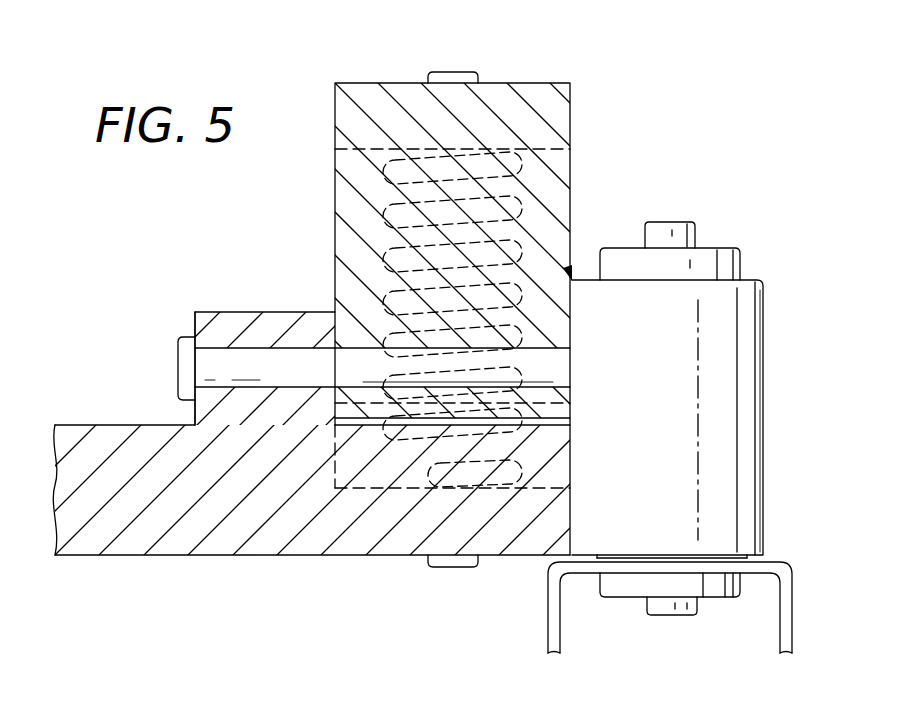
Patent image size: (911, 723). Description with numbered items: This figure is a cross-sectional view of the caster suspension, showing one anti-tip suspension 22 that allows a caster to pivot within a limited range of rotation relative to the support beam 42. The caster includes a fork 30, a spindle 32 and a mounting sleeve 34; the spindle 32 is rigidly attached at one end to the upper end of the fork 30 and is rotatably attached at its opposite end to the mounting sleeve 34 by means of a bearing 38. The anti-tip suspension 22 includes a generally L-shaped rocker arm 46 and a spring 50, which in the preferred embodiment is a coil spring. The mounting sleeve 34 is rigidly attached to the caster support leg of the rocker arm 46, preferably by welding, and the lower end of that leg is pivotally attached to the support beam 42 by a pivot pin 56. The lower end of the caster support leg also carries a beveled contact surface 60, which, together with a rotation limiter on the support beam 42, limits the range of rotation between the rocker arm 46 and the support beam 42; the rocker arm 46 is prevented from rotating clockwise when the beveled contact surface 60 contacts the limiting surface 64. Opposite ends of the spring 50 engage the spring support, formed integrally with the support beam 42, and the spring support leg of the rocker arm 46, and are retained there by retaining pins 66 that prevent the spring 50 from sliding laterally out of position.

The anti-tip suspension 22 is at (603, 146).
The fork 30 is at (547, 612).
The spindle 32 is at (665, 612).
The mounting sleeve 34 is at (688, 382).
The bearing 38 is at (725, 250).
The support beam 42 is at (252, 557).
The rocker arm 46 is at (528, 82).
The spring 50 is at (352, 230).
The pivot pin 56 is at (178, 372).
The beveled contact surface 60 is at (572, 426).
The limiting surface 64 is at (340, 395).
The retaining pin 66 is at (432, 72).